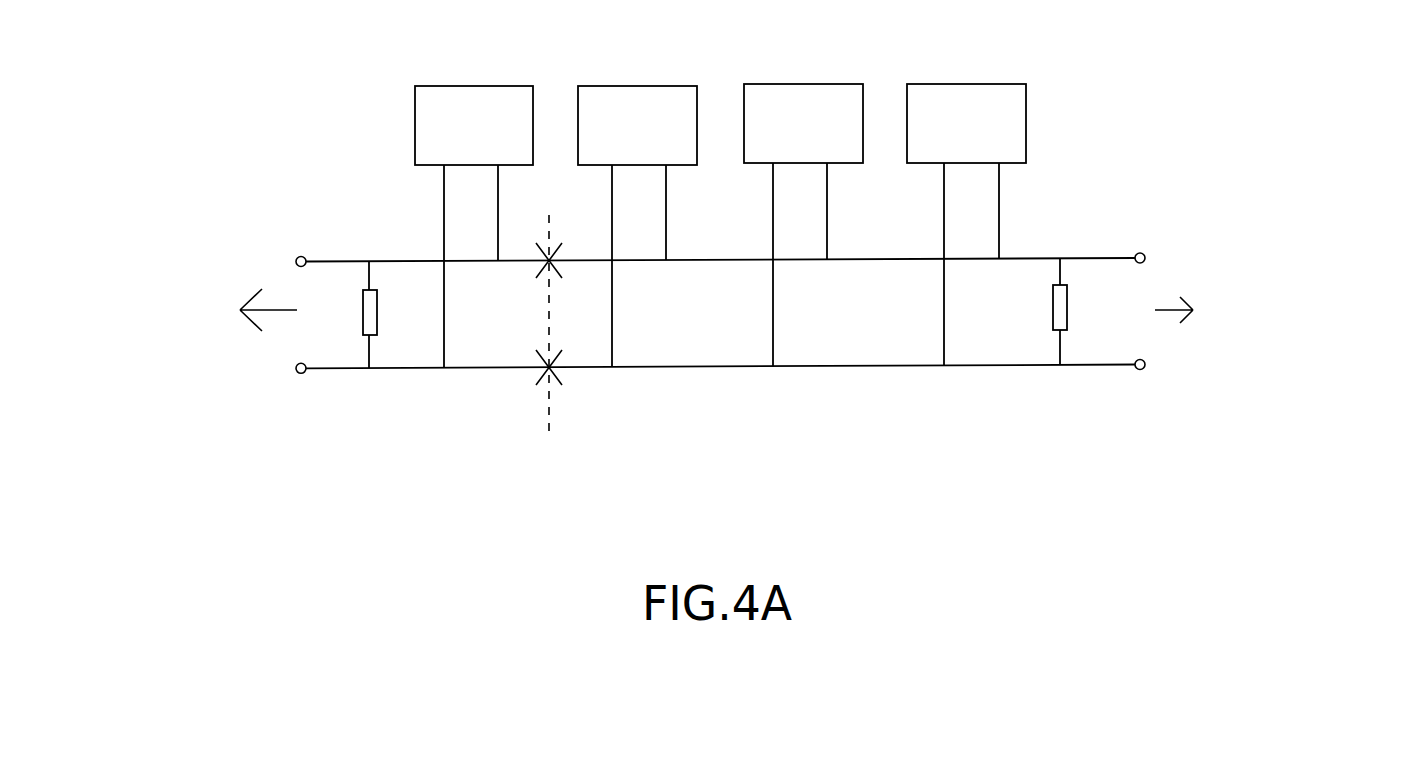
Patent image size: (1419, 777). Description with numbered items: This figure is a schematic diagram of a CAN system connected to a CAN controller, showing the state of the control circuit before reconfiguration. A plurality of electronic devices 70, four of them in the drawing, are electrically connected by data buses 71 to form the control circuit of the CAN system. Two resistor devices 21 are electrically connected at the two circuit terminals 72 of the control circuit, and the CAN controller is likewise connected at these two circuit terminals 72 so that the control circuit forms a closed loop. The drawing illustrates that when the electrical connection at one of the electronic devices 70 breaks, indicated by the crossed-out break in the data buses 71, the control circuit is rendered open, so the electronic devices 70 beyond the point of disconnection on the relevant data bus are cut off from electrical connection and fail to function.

The electronic devices 70 is at (469, 97).
The data buses 71 is at (405, 260).
The resistor devices 21 is at (370, 318).
The circuit terminals 72 is at (285, 360).